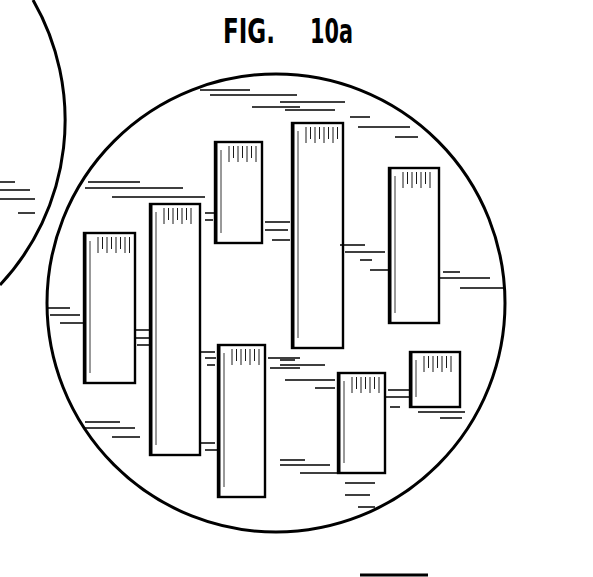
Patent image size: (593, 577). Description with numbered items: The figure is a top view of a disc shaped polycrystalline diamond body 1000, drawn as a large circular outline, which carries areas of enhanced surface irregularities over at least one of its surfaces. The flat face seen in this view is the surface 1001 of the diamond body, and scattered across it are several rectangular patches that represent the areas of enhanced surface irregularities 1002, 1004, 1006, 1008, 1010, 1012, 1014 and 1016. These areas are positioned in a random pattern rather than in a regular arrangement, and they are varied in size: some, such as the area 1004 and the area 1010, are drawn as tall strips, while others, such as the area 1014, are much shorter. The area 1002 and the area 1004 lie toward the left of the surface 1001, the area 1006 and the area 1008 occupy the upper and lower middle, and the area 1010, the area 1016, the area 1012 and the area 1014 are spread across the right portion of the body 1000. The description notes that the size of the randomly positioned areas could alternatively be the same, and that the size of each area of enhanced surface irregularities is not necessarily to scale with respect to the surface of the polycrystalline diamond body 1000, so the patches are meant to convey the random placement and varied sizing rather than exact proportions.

The polycrystalline diamond body 1000 is at (110, 468).
The surface 1001 is at (380, 133).
The area of enhanced surface irregularities 1002 is at (95, 371).
The area of enhanced surface irregularities 1004 is at (168, 445).
The area of enhanced surface irregularities 1006 is at (240, 140).
The area of enhanced surface irregularities 1008 is at (238, 485).
The area of enhanced surface irregularities 1010 is at (323, 122).
The area of enhanced surface irregularities 1012 is at (362, 460).
The area of enhanced surface irregularities 1014 is at (440, 397).
The area of enhanced surface irregularities 1016 is at (427, 188).